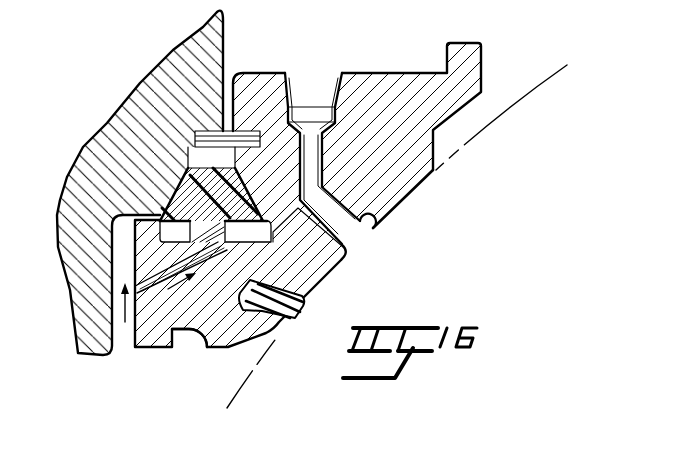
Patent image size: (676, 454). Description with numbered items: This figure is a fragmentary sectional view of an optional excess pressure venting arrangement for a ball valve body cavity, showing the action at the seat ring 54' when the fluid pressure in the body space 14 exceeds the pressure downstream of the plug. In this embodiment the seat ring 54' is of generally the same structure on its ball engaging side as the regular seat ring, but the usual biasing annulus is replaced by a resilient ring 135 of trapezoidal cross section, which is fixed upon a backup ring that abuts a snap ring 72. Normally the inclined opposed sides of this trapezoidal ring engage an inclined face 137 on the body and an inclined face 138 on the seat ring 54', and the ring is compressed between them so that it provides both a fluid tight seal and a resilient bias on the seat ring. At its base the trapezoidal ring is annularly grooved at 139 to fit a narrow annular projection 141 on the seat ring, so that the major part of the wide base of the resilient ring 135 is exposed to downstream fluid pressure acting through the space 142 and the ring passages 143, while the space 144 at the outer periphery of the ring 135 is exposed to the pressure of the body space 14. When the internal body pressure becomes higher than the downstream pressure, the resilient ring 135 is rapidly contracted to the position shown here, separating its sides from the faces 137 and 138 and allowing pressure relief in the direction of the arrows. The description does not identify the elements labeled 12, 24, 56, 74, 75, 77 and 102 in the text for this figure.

The housing body 12 is at (102, 358).
The body space 14 is at (268, 45).
The chamber region 24 is at (493, 171).
The seat ring 54' is at (357, 142).
The body portion 56 is at (401, 202).
The snap ring 72 is at (215, 126).
The recess 74 is at (193, 330).
The notch 75 is at (364, 229).
The bore 77 is at (308, 83).
The fastener 102 is at (282, 312).
The resilient ring 135 is at (273, 228).
The inclined face 137 is at (177, 190).
The inclined face 138 is at (243, 190).
The annular groove 139 is at (222, 222).
The annular projection 141 is at (201, 245).
The space 142 is at (113, 282).
The ring passages 143 is at (153, 297).
The space 144 is at (230, 108).